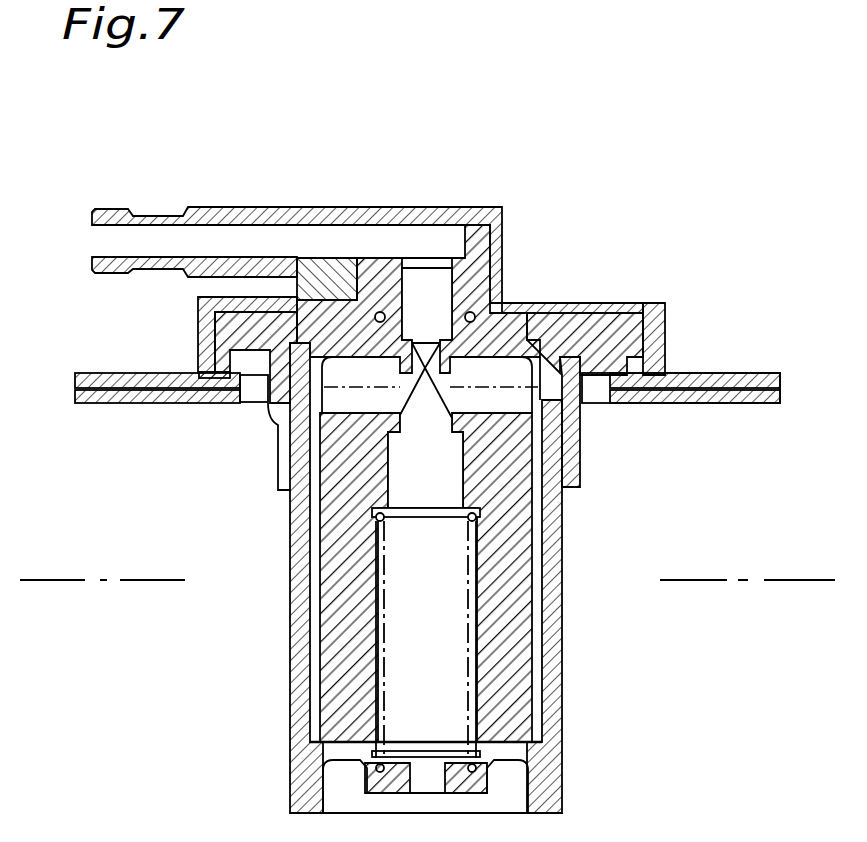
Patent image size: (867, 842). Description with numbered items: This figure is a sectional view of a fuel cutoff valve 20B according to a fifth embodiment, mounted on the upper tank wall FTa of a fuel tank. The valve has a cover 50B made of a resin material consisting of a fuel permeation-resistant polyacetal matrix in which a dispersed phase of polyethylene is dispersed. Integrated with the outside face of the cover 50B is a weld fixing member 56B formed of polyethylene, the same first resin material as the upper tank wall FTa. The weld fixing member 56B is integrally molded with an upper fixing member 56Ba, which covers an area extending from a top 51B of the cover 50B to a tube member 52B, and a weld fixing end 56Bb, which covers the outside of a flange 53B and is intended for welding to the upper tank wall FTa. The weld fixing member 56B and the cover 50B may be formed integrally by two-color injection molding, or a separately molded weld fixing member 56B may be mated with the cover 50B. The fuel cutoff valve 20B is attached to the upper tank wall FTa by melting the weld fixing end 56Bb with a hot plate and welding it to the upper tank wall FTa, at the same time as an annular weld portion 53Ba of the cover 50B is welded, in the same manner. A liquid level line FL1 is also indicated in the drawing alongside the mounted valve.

The fuel cutoff valve 20B is at (521, 150).
The cover 50B is at (418, 102).
The top 51B is at (330, 330).
The tube member 52B is at (372, 220).
The flange 53B is at (217, 345).
The annular weld portion 53Ba is at (220, 370).
The weld fixing member 56B is at (723, 229).
The upper fixing member 56Ba is at (543, 303).
The weld fixing end 56Bb is at (668, 352).
The upper tank wall FTa is at (735, 373).
The fuel level line FL1 is at (791, 578).